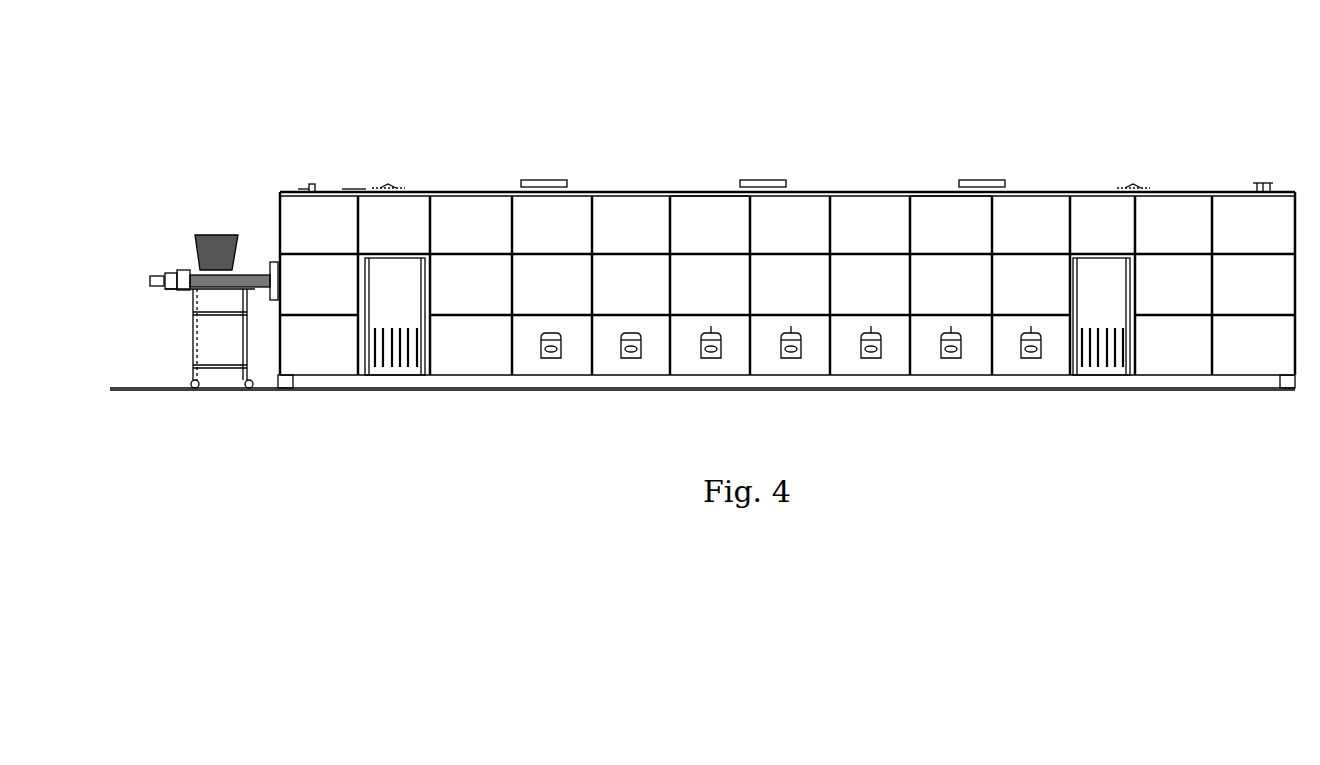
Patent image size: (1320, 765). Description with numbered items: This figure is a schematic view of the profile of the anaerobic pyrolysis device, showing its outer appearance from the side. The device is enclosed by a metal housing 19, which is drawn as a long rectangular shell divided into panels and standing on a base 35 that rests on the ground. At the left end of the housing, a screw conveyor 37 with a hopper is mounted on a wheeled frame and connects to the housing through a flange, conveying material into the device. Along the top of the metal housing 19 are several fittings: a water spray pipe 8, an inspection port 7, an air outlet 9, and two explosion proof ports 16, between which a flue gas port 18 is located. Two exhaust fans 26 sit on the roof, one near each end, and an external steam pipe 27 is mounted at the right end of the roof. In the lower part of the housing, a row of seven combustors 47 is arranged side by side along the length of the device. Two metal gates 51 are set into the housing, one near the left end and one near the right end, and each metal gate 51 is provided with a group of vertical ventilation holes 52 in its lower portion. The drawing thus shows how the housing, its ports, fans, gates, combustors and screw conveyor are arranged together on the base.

The inspection port 7 is at (318, 187).
The water spray pipe 8 is at (311, 184).
The air outlet 9 is at (356, 187).
The explosion proof port 16 is at (545, 180).
The flue gas port 18 is at (760, 180).
The metal housing 19 is at (703, 218).
The exhaust fan 26 is at (390, 186).
The external steam pipe 27 is at (1268, 182).
The base 35 is at (352, 382).
The screw conveyor 37 is at (193, 278).
The combustor 47 is at (633, 356).
The metal gate 51 is at (425, 372).
The ventilation hole 52 is at (388, 357).